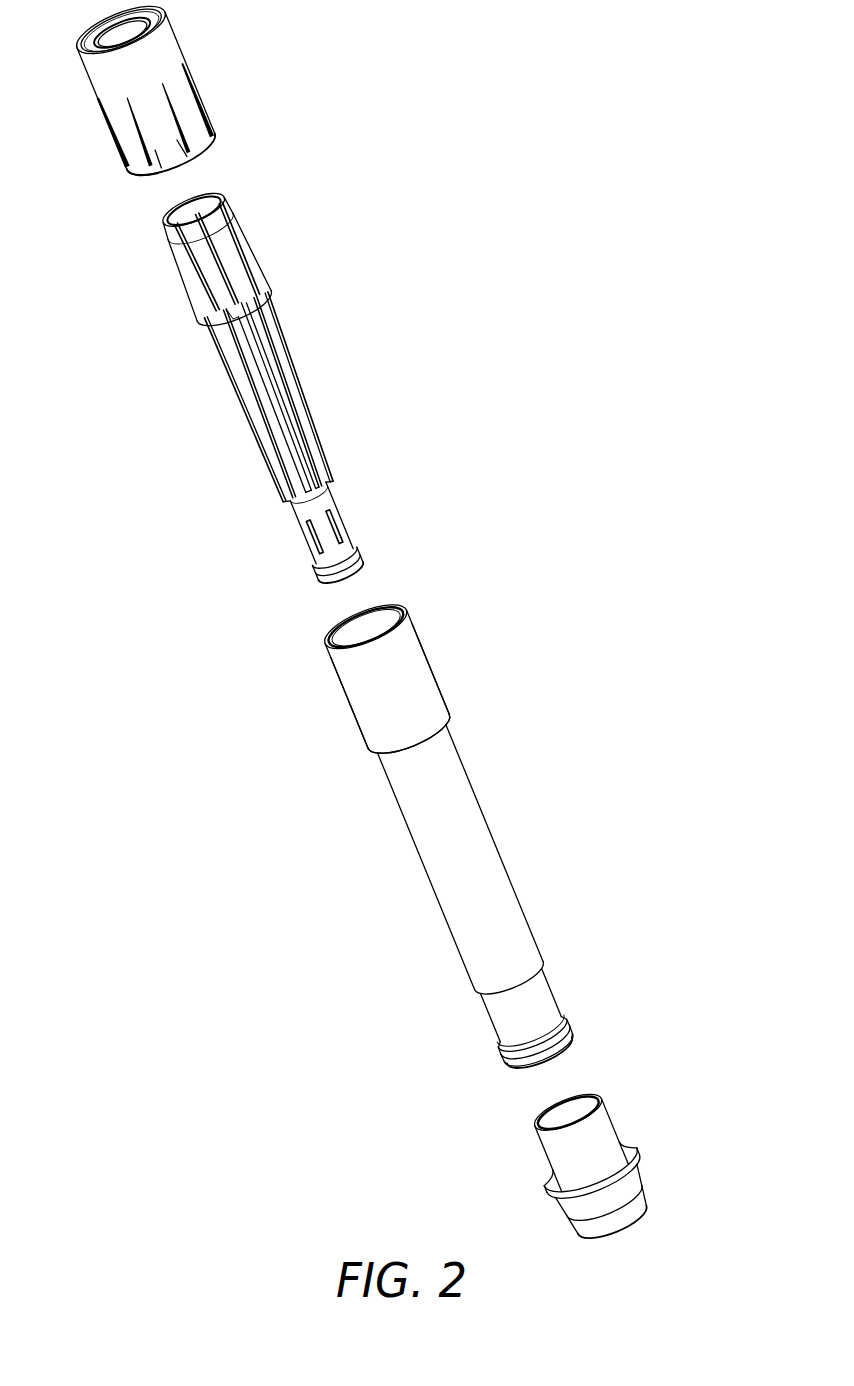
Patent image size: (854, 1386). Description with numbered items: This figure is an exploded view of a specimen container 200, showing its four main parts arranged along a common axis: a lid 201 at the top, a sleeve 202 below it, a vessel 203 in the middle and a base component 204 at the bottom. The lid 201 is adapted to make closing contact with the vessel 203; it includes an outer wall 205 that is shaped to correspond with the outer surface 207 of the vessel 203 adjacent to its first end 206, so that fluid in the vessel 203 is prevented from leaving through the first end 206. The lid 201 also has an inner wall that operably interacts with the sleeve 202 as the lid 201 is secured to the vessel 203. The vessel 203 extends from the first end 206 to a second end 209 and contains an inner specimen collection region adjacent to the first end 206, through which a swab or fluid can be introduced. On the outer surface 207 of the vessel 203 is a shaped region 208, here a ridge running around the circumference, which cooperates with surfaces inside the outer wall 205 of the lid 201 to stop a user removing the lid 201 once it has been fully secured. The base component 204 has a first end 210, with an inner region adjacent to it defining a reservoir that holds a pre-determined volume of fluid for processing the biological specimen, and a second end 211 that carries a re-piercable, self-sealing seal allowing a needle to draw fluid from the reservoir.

The specimen container 200 is at (399, 642).
The lid 201 is at (224, 70).
The sleeve 202 is at (338, 381).
The vessel 203 is at (450, 843).
The base component 204 is at (595, 1183).
The outer wall 205 is at (124, 173).
The first end 206 is at (332, 636).
The outer surface 207 is at (348, 700).
The shaped region 208 is at (393, 752).
The second end 209 is at (567, 1052).
The first end 210 is at (537, 1111).
The second end 211 is at (635, 1226).